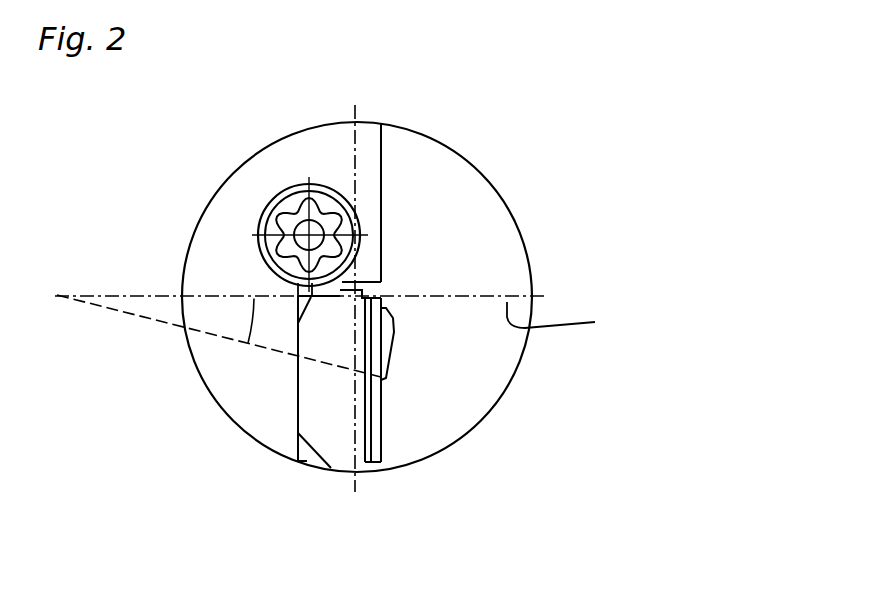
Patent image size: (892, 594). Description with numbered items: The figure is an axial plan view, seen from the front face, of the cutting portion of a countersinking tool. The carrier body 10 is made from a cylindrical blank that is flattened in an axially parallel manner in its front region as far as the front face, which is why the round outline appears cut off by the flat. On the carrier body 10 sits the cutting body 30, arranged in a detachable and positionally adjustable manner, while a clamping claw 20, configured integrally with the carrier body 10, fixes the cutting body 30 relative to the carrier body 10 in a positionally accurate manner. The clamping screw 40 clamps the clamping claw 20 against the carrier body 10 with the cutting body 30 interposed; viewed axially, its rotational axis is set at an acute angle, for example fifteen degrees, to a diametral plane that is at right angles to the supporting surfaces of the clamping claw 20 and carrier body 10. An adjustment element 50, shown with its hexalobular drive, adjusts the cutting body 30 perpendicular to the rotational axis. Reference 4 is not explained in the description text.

The cutting tool 4 is at (262, 169).
The carrier body 10 is at (507, 243).
The adjustment element 50 is at (258, 235).
The cutting body 30 is at (335, 438).
The clamping claw 20 is at (380, 442).
The clamping screw 40 is at (393, 345).